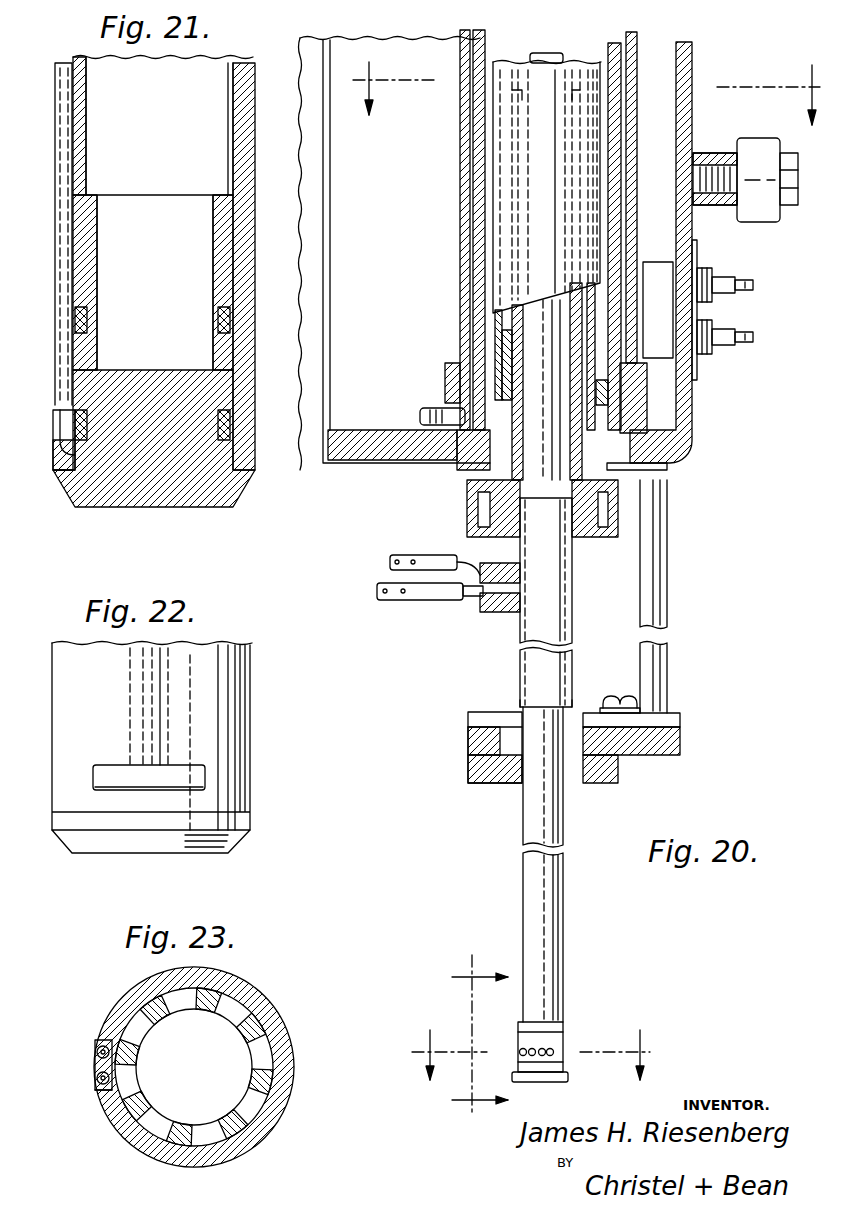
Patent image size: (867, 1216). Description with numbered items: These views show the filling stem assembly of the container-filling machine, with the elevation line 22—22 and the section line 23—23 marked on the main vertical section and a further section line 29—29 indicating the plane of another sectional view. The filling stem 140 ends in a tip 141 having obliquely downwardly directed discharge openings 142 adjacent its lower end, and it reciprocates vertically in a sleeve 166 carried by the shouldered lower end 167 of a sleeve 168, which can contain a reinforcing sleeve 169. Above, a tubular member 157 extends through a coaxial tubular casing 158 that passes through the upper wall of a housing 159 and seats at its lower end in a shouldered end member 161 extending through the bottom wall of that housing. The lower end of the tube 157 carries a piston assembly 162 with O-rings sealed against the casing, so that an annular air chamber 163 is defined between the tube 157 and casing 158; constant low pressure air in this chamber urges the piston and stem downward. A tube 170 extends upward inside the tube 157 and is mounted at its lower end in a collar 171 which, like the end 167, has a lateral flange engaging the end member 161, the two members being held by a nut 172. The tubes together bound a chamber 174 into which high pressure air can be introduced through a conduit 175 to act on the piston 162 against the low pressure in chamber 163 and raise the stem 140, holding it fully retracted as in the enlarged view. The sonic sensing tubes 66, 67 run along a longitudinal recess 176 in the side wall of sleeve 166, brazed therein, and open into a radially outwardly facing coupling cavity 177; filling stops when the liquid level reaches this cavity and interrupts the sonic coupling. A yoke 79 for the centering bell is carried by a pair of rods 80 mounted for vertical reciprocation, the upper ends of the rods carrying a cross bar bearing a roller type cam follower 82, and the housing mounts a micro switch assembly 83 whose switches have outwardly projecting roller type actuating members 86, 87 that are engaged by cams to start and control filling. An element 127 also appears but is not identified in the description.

In FIG. 20, the view line 22— 22 is at (471, 1034).
In FIG. 20, the section line 23— 23 is at (535, 1053).
In FIG. 20, the section line 29— 29 is at (584, 83).
In FIG. 22, the sonic sensing tube 66 is at (128, 682).
In FIG. 23, the sonic sensing tube 66 is at (96, 1052).
In FIG. 20, the sonic sensing tube 66 is at (388, 595).
In FIG. 21, the sonic sensing tube 67 is at (60, 206).
In FIG. 22, the sonic sensing tube 67 is at (156, 710).
In FIG. 23, the sonic sensing tube 67 is at (96, 1078).
In FIG. 20, the sonic sensing tube 67 is at (446, 595).
In FIG. 20, the yoke 79 is at (468, 763).
In FIG. 20, the rods 80 is at (670, 628).
In FIG. 20, the roller type cam follower 82 is at (763, 141).
In FIG. 20, the micro switch assembly 83 is at (655, 262).
In FIG. 20, the roller type actuating member 86 is at (753, 285).
In FIG. 20, the roller type actuating member 87 is at (753, 337).
In FIG. 20, the cable connector 127 is at (407, 557).
In FIG. 21, the filling stem 140 is at (232, 62).
In FIG. 20, the filling stem 140 is at (522, 828).
In FIG. 21, the tip 141 is at (126, 507).
In FIG. 22, the tip 141 is at (120, 853).
In FIG. 23, the tip 141 is at (264, 1045).
In FIG. 20, the tip 141 is at (541, 1075).
In FIG. 21, the discharge openings 142 is at (84, 377).
In FIG. 23, the discharge openings 142 is at (140, 1066).
In FIG. 20, the discharge openings 142 is at (540, 1044).
In FIG. 20, the tubular member 157 is at (618, 78).
In FIG. 20, the tubular casing 158 is at (638, 52).
In FIG. 20, the housing 159 is at (388, 465).
In FIG. 20, the shouldered end member 161 is at (648, 410).
In FIG. 20, the piston assembly 162 is at (500, 338).
In FIG. 20, the annular air chamber 163 is at (462, 152).
In FIG. 21, the sleeve 166 is at (243, 133).
In FIG. 22, the sleeve 166 is at (252, 662).
In FIG. 23, the sleeve 166 is at (255, 1005).
In FIG. 20, the sleeve 166 is at (574, 598).
In FIG. 20, the shouldered lower end 167 is at (583, 535).
In FIG. 20, the sleeve 168 is at (600, 390).
In FIG. 20, the reinforcing sleeve 169 is at (660, 450).
In FIG. 20, the tube 170 is at (516, 322).
In FIG. 20, the collar 171 is at (470, 460).
In FIG. 20, the nut 172 is at (468, 497).
In FIG. 20, the chamber 174 is at (505, 358).
In FIG. 20, the conduit 175 is at (445, 408).
In FIG. 21, the longitudinal recess 176 is at (70, 78).
In FIG. 22, the longitudinal recess 176 is at (162, 746).
In FIG. 23, the longitudinal recess 176 is at (95, 1046).
In FIG. 21, the coupling cavity 177 is at (60, 430).
In FIG. 22, the coupling cavity 177 is at (125, 790).
In FIG. 23, the coupling cavity 177 is at (100, 1095).
In FIG. 20, the coupling cavity 177 is at (522, 688).